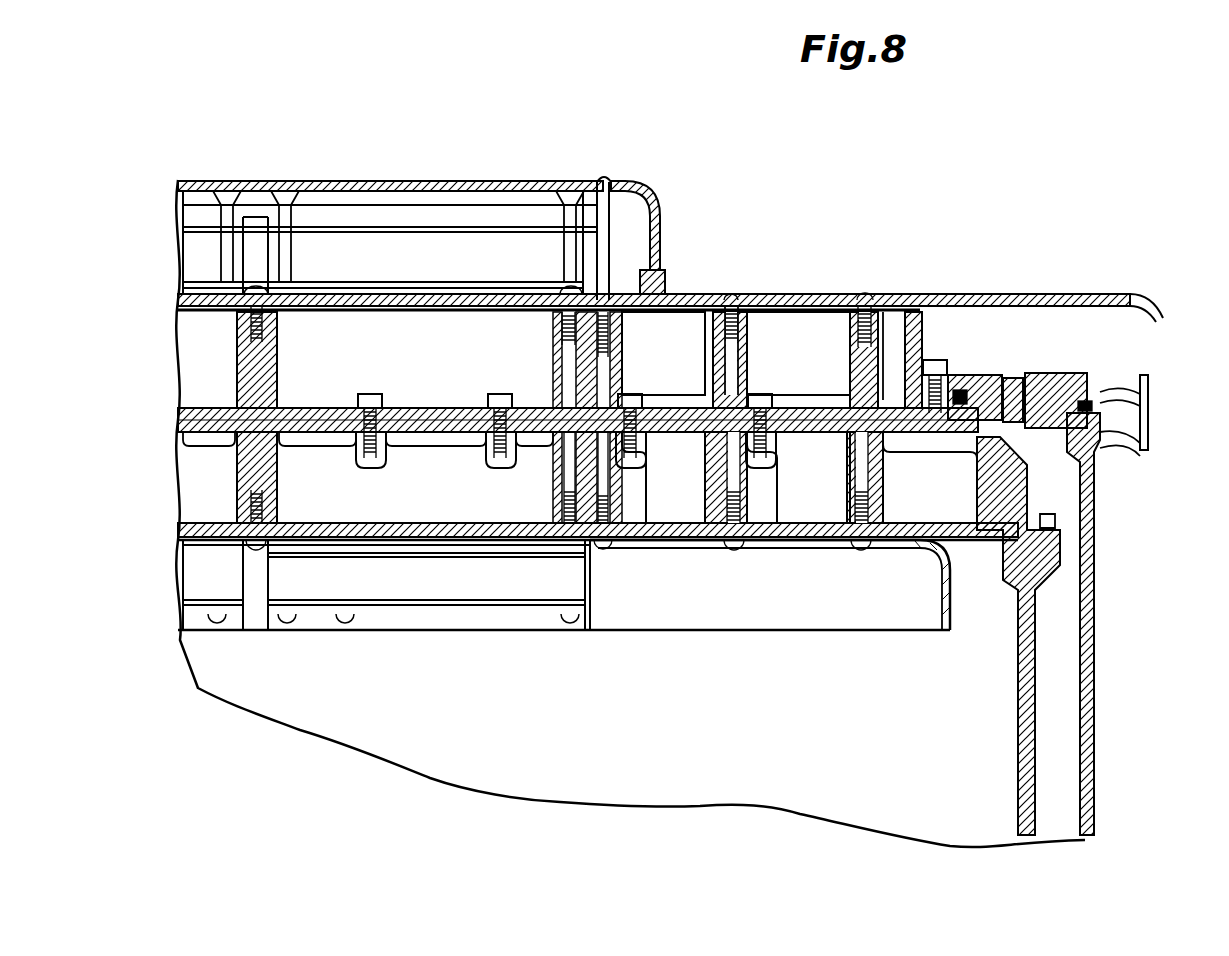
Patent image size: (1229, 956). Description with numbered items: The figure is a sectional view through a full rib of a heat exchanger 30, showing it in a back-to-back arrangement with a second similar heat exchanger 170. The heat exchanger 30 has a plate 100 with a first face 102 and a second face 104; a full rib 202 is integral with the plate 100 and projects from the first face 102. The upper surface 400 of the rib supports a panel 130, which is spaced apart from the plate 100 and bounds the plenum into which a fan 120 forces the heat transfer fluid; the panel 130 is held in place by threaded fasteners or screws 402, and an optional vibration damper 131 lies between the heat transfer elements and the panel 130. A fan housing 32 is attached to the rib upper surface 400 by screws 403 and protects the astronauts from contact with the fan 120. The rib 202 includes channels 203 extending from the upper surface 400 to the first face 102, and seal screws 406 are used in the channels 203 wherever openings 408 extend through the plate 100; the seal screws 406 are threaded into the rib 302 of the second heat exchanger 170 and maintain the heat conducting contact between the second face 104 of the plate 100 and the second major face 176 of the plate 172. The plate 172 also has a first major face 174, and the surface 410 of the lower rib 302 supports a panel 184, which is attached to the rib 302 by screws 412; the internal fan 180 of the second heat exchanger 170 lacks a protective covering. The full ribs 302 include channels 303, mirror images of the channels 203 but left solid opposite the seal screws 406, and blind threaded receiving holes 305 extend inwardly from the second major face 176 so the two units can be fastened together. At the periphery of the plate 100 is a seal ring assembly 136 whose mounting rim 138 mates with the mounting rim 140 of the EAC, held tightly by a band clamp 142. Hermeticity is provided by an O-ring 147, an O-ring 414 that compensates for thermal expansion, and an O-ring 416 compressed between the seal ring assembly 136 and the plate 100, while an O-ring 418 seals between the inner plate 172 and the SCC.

The heat exchanger 30 is at (700, 215).
The fan housing 32 is at (480, 181).
The plate 100 is at (656, 398).
The first face 102 is at (680, 400).
The second face 104 is at (692, 418).
The fan 120 is at (432, 207).
The panel 130 is at (918, 302).
The vibration damper 131 is at (185, 322).
The seal ring assembly 136 is at (1060, 378).
The mounting rim 138 is at (1150, 382).
The mounting rim 140 is at (1104, 432).
The band clamp 142 is at (1150, 432).
The O-ring 147 is at (1088, 398).
The second heat exchanger 170 is at (663, 546).
The plate 172 is at (668, 450).
The first major face 174 is at (690, 443).
The second major face 176 is at (700, 436).
The fan 180 is at (500, 578).
The panel 184 is at (862, 540).
The full rib 202 is at (762, 300).
The channel 203 is at (810, 320).
The full rib 302 is at (840, 494).
The channel 303 is at (705, 535).
The threaded receiving hole 305 is at (386, 456).
The upper surface 400 is at (262, 300).
The screw 402 is at (862, 292).
The screw 403 is at (606, 178).
The seal screw 406 is at (632, 394).
The opening 408 is at (375, 408).
The surface 410 is at (882, 540).
The screw 412 is at (858, 548).
The O-ring 414 is at (1015, 388).
The O-ring 416 is at (960, 388).
The O-ring 418 is at (1005, 565).